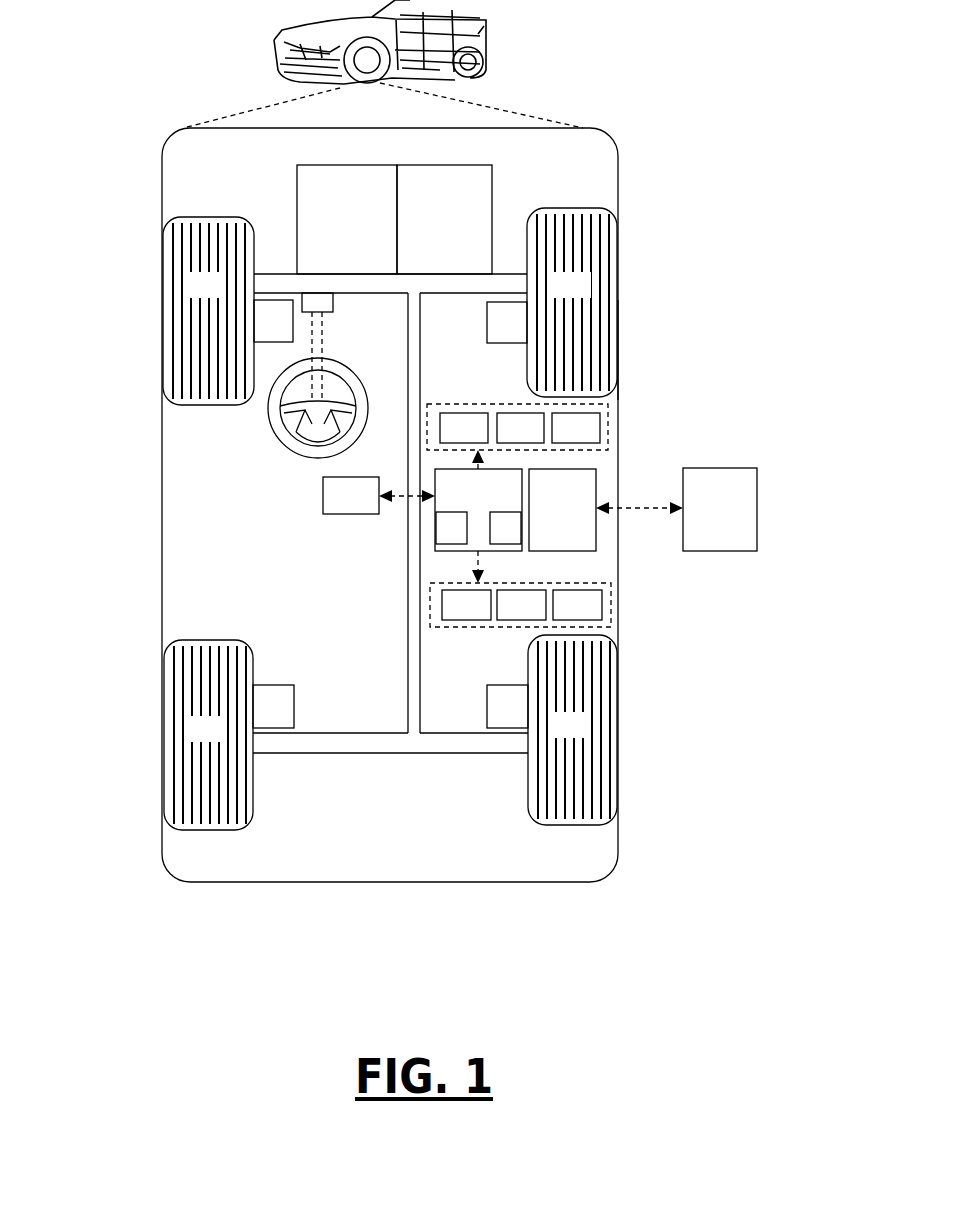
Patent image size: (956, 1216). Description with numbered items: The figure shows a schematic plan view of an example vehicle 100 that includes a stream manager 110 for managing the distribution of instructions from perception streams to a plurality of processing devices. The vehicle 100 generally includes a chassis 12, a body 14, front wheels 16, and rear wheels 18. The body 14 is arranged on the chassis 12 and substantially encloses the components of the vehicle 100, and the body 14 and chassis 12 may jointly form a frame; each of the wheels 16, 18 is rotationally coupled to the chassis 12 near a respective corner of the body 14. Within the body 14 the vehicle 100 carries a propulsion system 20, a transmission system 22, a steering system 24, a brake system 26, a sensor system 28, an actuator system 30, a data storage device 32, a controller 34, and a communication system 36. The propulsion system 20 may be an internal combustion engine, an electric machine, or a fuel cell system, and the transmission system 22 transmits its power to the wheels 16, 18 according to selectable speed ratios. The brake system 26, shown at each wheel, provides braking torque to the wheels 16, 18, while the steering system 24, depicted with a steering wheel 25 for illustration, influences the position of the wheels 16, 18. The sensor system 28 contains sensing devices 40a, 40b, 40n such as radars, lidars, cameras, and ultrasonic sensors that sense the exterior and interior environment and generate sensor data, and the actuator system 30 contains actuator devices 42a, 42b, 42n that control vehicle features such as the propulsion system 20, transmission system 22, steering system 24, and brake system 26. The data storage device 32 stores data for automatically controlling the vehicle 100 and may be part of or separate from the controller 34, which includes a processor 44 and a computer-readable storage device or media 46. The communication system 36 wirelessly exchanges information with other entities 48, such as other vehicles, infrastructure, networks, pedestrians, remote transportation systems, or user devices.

The vehicle 100 is at (262, 40).
The stream manager 110 is at (640, 340).
The chassis 12 is at (415, 753).
The body 14 is at (162, 474).
The front wheels 16 is at (196, 298).
The rear wheels 18 is at (196, 742).
The propulsion system 20 is at (336, 229).
The transmission system 22 is at (433, 229).
The steering system 24 is at (293, 462).
The steering wheel 25 is at (356, 372).
The brake system 26 is at (262, 331).
The sensor system 28 is at (517, 404).
The actuator system 30 is at (520, 628).
The data storage device 32 is at (340, 506).
The controller 34 is at (478, 516).
The communication system 36 is at (551, 518).
The sensing device 40a is at (449, 438).
The sensing device 40b is at (505, 438).
The sensing device 40n is at (561, 438).
The actuator device 42a is at (451, 615).
The actuator device 42b is at (506, 615).
The actuator device 42n is at (562, 615).
The processor 44 is at (442, 539).
The computer-readable storage device or media 46 is at (496, 539).
The other entities 48 is at (709, 518).